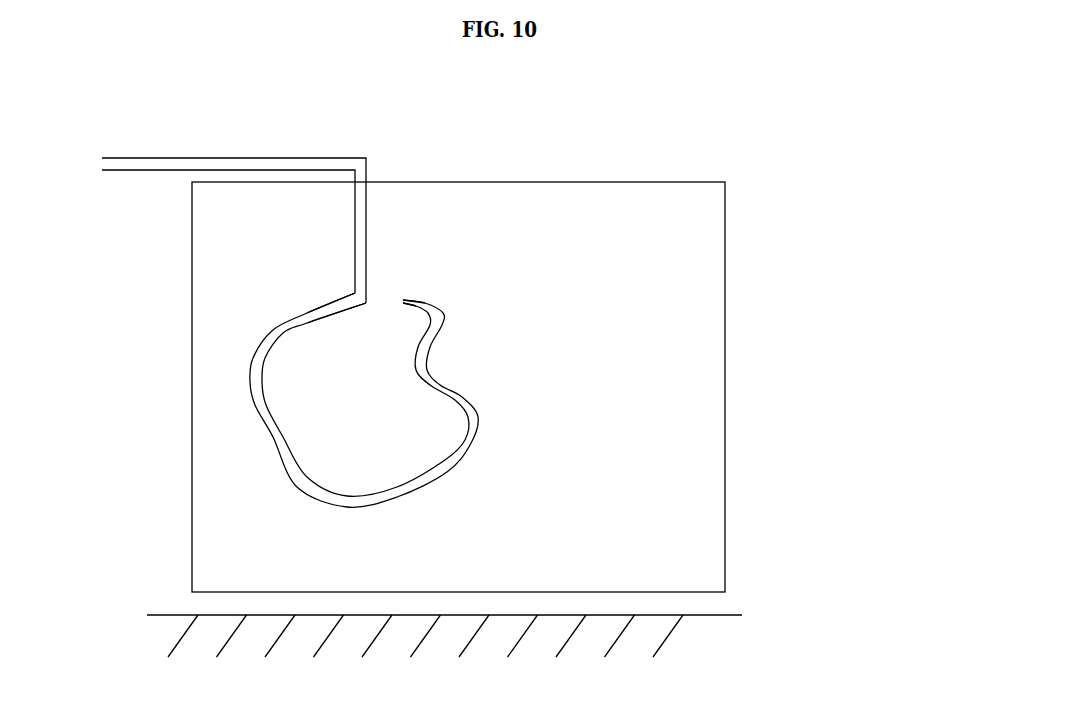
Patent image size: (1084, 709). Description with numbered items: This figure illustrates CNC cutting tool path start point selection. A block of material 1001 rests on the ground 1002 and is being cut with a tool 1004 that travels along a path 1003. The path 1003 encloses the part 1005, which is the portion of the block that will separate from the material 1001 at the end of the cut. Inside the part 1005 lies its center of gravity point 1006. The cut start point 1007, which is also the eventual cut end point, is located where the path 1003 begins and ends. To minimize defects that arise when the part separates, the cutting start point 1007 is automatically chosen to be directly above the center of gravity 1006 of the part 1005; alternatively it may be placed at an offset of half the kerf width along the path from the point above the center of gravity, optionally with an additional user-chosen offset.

The block of material 1001 is at (667, 330).
The ground 1002 is at (702, 613).
The path 1003 is at (367, 228).
The tool 1004 is at (402, 302).
The part being cut 1005 is at (415, 438).
The center of gravity point 1006 is at (363, 404).
The cut start point 1007 is at (353, 283).